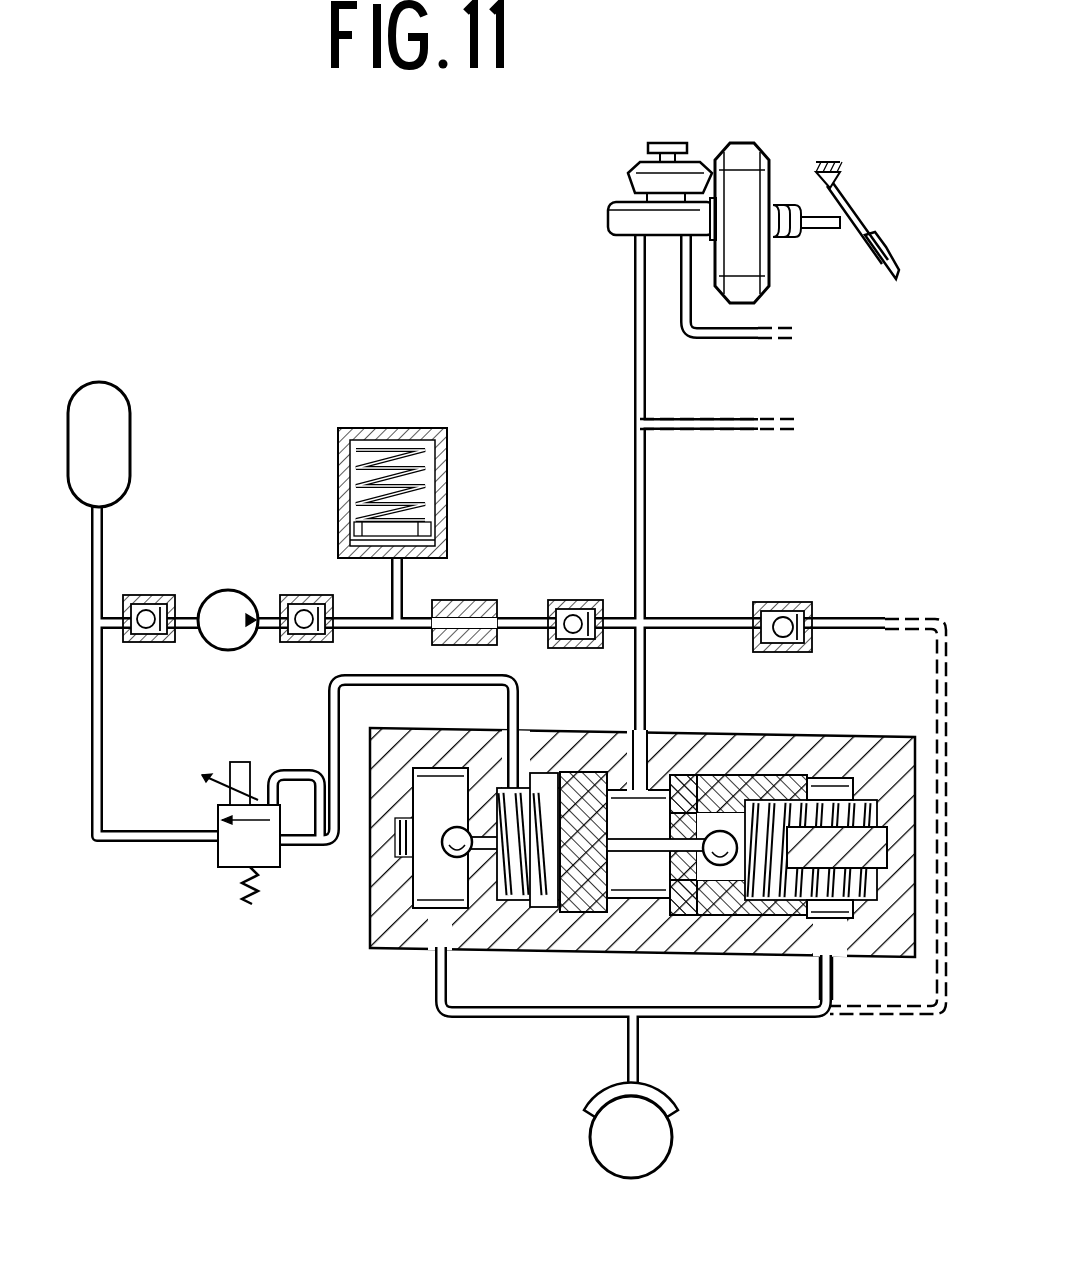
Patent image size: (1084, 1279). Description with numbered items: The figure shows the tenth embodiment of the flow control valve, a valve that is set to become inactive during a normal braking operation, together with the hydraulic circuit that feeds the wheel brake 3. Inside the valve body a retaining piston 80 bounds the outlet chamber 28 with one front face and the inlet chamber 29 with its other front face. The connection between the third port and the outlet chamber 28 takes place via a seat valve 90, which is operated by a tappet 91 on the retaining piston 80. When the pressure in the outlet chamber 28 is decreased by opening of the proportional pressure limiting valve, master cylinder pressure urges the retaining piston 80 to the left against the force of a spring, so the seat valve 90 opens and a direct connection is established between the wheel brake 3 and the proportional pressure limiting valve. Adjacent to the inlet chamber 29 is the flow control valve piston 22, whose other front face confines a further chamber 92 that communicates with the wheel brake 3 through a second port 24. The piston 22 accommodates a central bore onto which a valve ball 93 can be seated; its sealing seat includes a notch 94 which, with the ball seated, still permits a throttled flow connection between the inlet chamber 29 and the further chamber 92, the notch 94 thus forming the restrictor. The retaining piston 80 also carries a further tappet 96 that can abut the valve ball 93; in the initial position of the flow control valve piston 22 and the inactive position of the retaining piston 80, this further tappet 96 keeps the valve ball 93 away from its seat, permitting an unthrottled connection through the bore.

The wheel brake 3 is at (672, 1110).
The flow control valve piston 22 is at (784, 849).
The second port 24 is at (822, 968).
The outlet chamber 28 is at (415, 870).
The inlet chamber 29 is at (628, 808).
The retaining piston 80 is at (590, 905).
The seat valve 90 is at (455, 868).
The tappet 91 is at (500, 915).
The further chamber 92 is at (843, 950).
The valve ball 93 is at (726, 866).
The notch 94 is at (692, 836).
The further tappet 96 is at (660, 895).